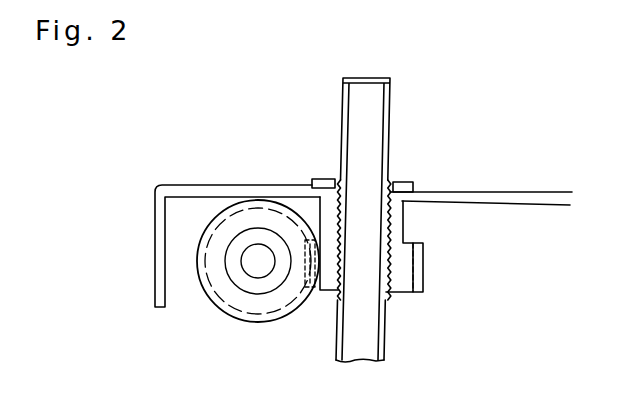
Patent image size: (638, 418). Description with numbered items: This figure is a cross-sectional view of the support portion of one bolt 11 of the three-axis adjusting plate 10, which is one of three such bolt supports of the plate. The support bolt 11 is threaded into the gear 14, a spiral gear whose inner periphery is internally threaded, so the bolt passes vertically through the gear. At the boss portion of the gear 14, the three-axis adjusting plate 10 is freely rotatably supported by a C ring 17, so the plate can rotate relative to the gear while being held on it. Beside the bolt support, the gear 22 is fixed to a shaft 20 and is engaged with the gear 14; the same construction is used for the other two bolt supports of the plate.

The three-axis adjusting plate 10 is at (533, 194).
The bolt 11 is at (373, 78).
The gear 14 is at (424, 263).
The C ring 17 is at (409, 184).
The shaft 20 is at (244, 276).
The gear 22 is at (267, 323).